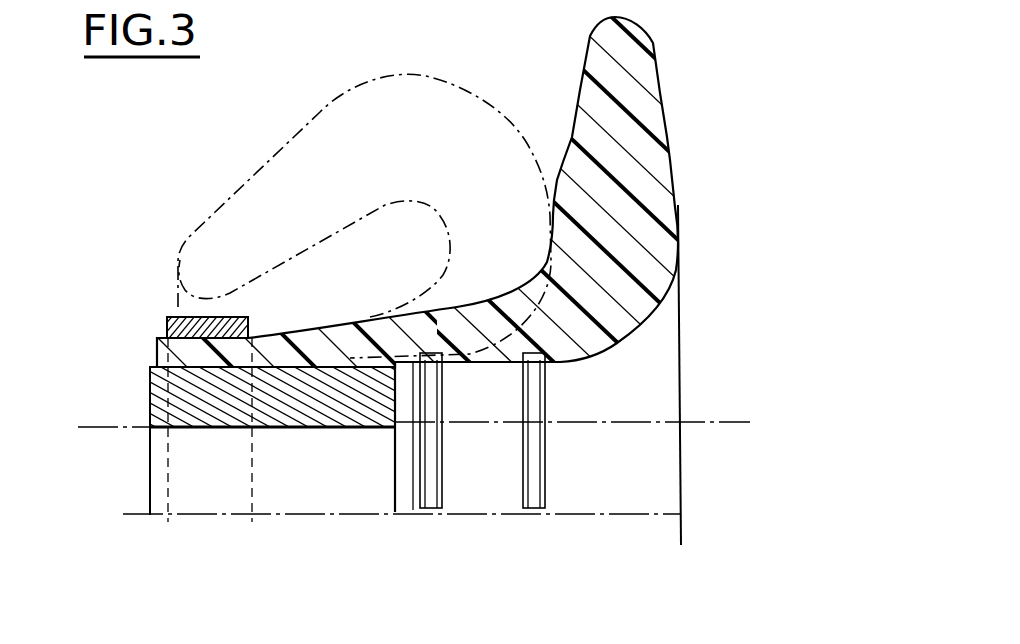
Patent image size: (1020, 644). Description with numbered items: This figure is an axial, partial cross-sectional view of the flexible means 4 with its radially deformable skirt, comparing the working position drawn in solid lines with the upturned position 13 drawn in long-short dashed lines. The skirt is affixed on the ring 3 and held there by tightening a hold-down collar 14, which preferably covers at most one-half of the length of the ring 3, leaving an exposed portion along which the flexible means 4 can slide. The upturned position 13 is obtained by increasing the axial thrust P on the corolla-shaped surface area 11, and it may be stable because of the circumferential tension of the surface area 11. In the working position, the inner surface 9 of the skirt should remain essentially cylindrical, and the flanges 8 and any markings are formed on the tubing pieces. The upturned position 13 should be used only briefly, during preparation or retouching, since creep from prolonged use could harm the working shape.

The ring 3 is at (197, 418).
The flexible means 4 is at (573, 320).
The flanges 8 is at (433, 485).
The inner surface 9 is at (503, 367).
The corolla-shaped surface area 11 is at (628, 222).
The upturned position 13 is at (287, 175).
The hold-down collar 14 is at (167, 330).
The axial thrust P is at (662, 93).